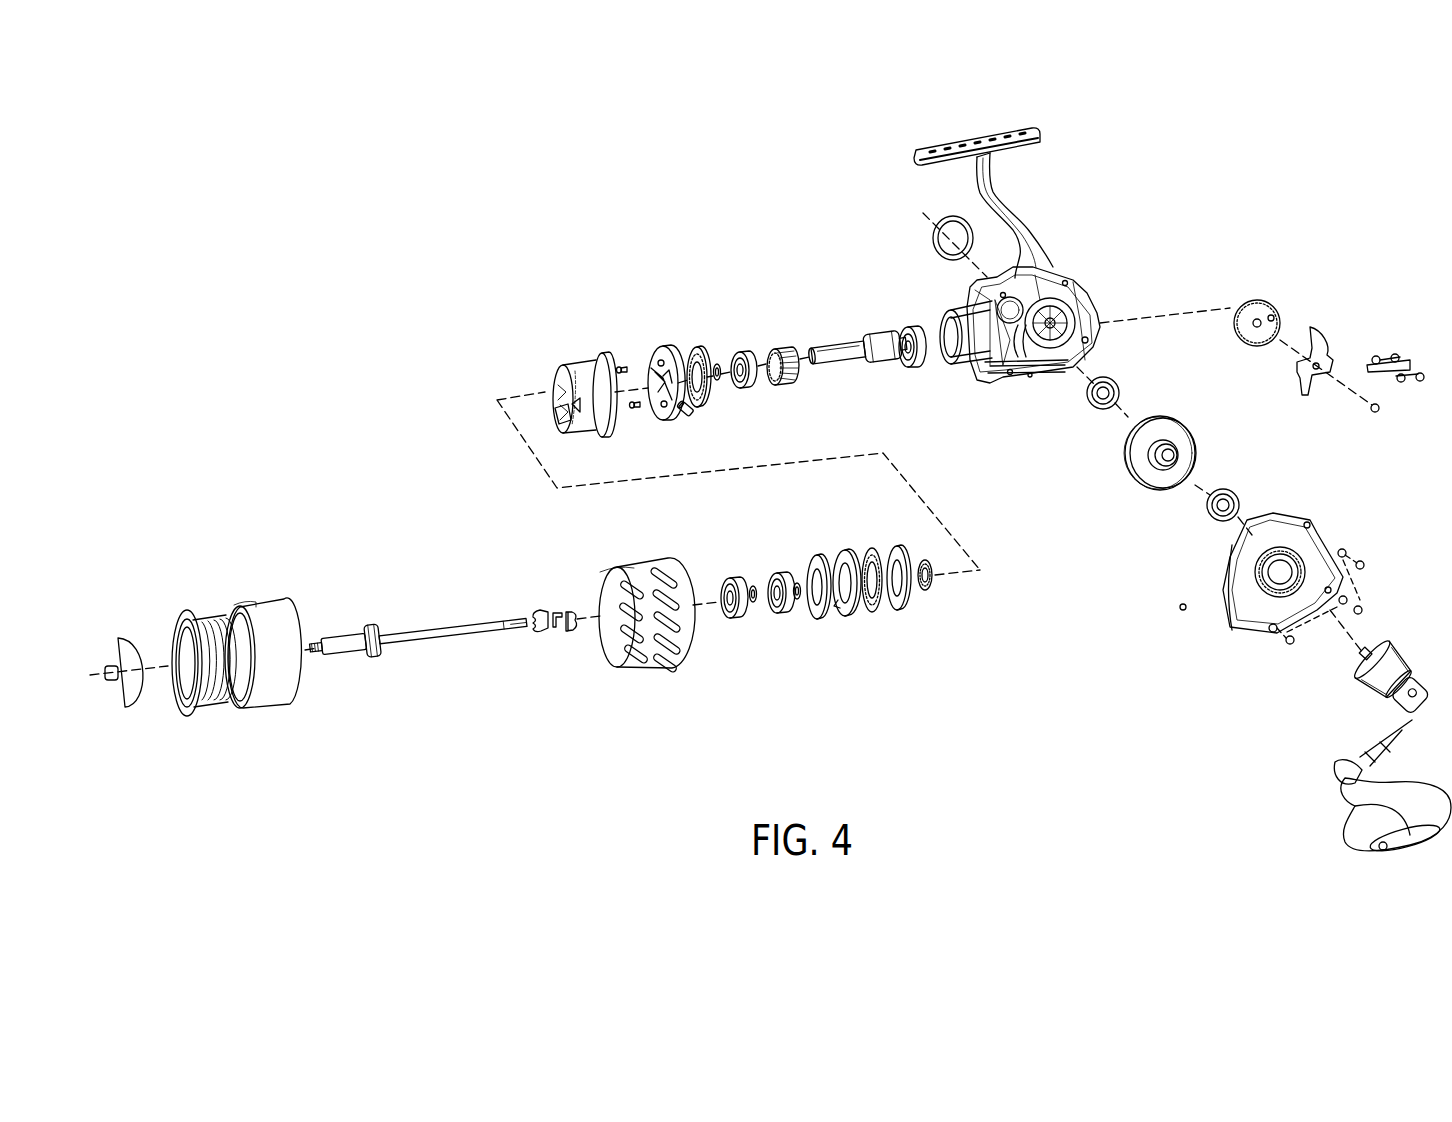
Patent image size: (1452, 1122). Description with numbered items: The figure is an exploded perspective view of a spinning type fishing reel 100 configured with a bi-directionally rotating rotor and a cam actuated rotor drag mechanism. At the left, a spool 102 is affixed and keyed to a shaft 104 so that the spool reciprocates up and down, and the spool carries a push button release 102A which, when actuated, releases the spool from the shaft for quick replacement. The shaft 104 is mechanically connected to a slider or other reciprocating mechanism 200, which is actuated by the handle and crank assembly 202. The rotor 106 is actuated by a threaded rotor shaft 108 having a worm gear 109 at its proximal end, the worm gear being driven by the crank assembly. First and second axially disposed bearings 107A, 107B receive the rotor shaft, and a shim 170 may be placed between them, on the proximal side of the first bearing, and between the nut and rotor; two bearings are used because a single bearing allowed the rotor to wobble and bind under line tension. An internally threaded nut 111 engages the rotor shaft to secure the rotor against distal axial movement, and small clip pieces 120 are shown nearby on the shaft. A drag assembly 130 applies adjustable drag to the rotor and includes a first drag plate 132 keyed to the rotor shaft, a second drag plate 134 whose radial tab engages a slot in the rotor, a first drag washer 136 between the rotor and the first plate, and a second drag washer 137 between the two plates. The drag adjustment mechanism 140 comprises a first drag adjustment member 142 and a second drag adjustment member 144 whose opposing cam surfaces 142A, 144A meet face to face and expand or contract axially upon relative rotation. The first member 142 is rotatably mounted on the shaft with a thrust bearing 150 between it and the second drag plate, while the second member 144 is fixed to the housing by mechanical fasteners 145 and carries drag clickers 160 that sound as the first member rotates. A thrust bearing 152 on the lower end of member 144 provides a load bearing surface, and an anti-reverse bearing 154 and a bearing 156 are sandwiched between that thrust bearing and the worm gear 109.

The fishing reel 100 is at (1145, 208).
The spool 102 is at (287, 703).
The push button release 102A is at (113, 680).
The shaft 104 is at (441, 643).
The rotor 106 is at (657, 660).
The first bearing 107A is at (780, 615).
The second bearing 107B is at (733, 618).
The rotor shaft 108 is at (833, 352).
The worm gear 109 is at (877, 363).
The internally threaded nut 111 is at (542, 633).
The clip members 120 is at (573, 620).
The drag assembly 130 is at (917, 615).
The first drag plate 132 is at (840, 560).
The second drag plate 134 is at (892, 556).
The first drag washer 136 is at (813, 560).
The second drag washer 137 is at (868, 556).
The drag adjustment mechanism 140 is at (678, 340).
The first drag adjustment member 142 is at (555, 376).
The cam surface 142A is at (557, 412).
The second drag adjustment member 144 is at (667, 404).
The cam surface 144A is at (660, 393).
The mechanical fasteners 145 is at (637, 402).
The thrust bearing 150 is at (928, 592).
The thrust bearing 152 is at (697, 360).
The anti-reverse bearing 154 is at (783, 383).
The bearing 156 is at (743, 353).
The drag clicker 160 is at (693, 410).
The shim 170 is at (797, 585).
The reciprocating mechanism 200 is at (1277, 247).
The crank assembly 202 is at (1380, 870).